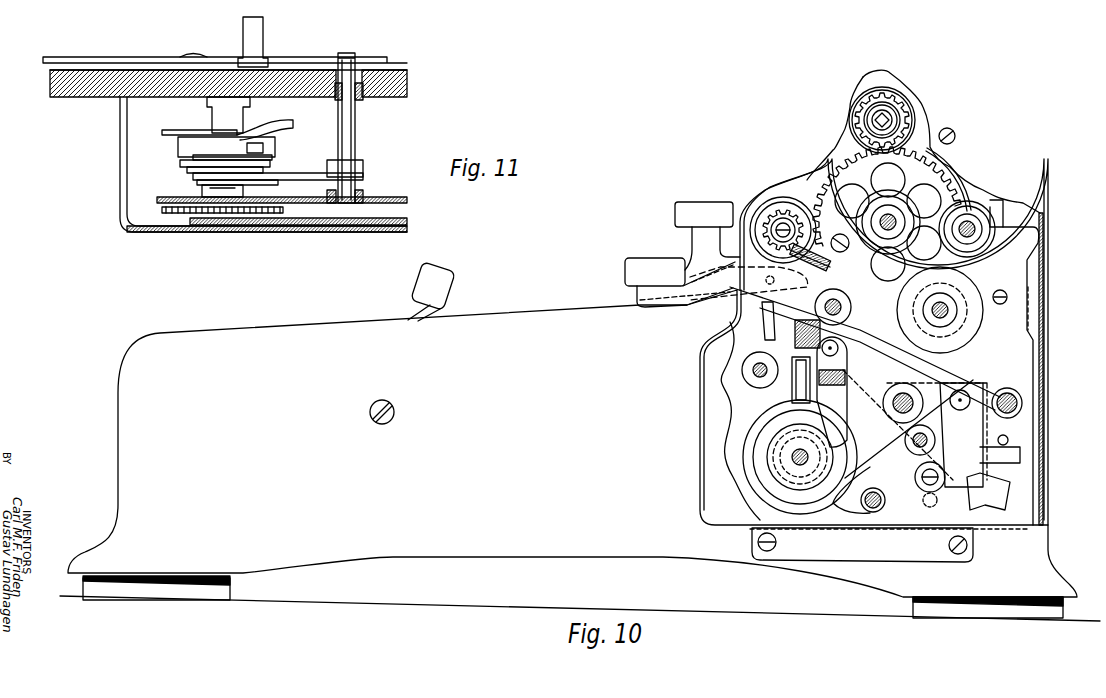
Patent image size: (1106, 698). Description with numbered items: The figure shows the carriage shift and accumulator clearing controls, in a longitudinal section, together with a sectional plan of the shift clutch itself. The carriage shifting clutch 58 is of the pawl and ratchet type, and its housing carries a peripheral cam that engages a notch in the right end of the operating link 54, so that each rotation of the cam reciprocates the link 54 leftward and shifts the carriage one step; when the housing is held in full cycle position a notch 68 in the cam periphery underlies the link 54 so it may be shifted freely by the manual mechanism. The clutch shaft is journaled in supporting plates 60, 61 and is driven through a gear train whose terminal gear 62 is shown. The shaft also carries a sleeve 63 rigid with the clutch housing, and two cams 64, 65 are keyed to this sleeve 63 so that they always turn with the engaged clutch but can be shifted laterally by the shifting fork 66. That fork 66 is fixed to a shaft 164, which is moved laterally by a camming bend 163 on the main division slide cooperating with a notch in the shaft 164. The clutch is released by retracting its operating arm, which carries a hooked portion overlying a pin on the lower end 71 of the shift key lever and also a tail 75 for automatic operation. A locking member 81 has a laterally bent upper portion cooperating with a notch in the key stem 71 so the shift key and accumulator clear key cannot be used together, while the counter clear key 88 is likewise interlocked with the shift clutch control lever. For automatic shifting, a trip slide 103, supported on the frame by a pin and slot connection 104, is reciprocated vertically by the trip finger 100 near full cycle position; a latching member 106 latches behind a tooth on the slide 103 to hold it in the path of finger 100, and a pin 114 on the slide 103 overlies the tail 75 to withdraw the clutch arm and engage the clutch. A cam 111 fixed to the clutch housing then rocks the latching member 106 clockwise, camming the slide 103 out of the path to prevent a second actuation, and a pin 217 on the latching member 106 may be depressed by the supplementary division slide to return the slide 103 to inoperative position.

In FIG. 10, the operating link 54 is at (790, 390).
In FIG. 11, the carriage shifting clutch 58 is at (226, 147).
In FIG. 11, the supporting plate 60 is at (162, 205).
In FIG. 11, the supporting plate 61 is at (200, 226).
In FIG. 11, the terminal gear 62 is at (190, 214).
In FIG. 11, the sleeve 63 is at (203, 190).
In FIG. 11, the cam 64 is at (278, 183).
In FIG. 11, the cam 65 is at (182, 163).
In FIG. 11, the shifting fork 66 is at (312, 175).
In FIG. 11, the notch 68 is at (210, 133).
In FIG. 10, the notch 68 is at (765, 405).
In FIG. 10, the lower end of clutch operating key lever 71 is at (678, 307).
In FIG. 10, the tail 75 is at (1020, 455).
In FIG. 10, the locking member 81 is at (768, 340).
In FIG. 10, the counter clear key 88 is at (700, 243).
In FIG. 10, the trip finger 100 is at (990, 207).
In FIG. 10, the trip slide 103 is at (1043, 257).
In FIG. 10, the pin and slot connection 104 is at (1022, 403).
In FIG. 10, the latching member 106 is at (897, 513).
In FIG. 11, the cam 111 is at (250, 163).
In FIG. 10, the pin 114 is at (1008, 440).
In FIG. 11, the camming bend 163 is at (330, 62).
In FIG. 11, the shaft 164 is at (347, 55).
In FIG. 10, the pin 217 is at (937, 508).